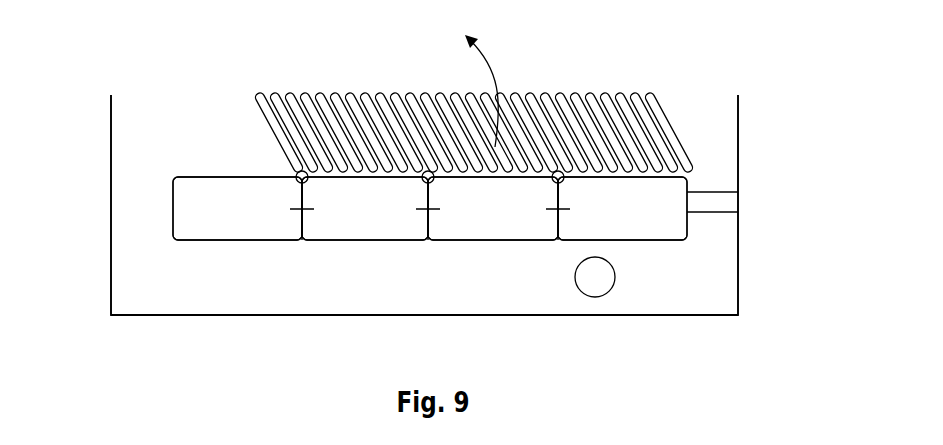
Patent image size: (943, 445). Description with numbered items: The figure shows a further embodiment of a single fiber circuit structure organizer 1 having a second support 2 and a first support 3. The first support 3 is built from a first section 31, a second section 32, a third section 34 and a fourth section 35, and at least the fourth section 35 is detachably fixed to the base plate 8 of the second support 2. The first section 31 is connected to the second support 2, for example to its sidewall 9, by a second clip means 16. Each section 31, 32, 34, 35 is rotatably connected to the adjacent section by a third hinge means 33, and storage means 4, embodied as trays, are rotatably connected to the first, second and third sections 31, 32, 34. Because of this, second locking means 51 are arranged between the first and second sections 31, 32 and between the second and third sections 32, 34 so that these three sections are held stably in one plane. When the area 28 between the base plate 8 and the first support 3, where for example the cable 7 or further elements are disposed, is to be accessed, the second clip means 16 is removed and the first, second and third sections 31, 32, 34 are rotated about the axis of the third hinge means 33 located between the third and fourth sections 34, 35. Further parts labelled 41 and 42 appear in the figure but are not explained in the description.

The single fiber circuit structure organizer 1 is at (723, 74).
The second support 2 is at (160, 315).
The first support 3 is at (166, 214).
The storage means 4 is at (364, 80).
The optical fiber cable 7 is at (616, 277).
The base plate 8 is at (417, 331).
The sidewall 9 is at (739, 158).
The second clip means 16 is at (712, 205).
The area 28 is at (706, 271).
The first section 31 is at (648, 222).
The second section 32 is at (507, 222).
The third hinge means 33 is at (296, 177).
The third section 34 is at (350, 220).
The fourth section 35 is at (232, 219).
The first support 41 is at (434, 238).
The second support 42 is at (563, 207).
The second locking means 51 is at (296, 237).